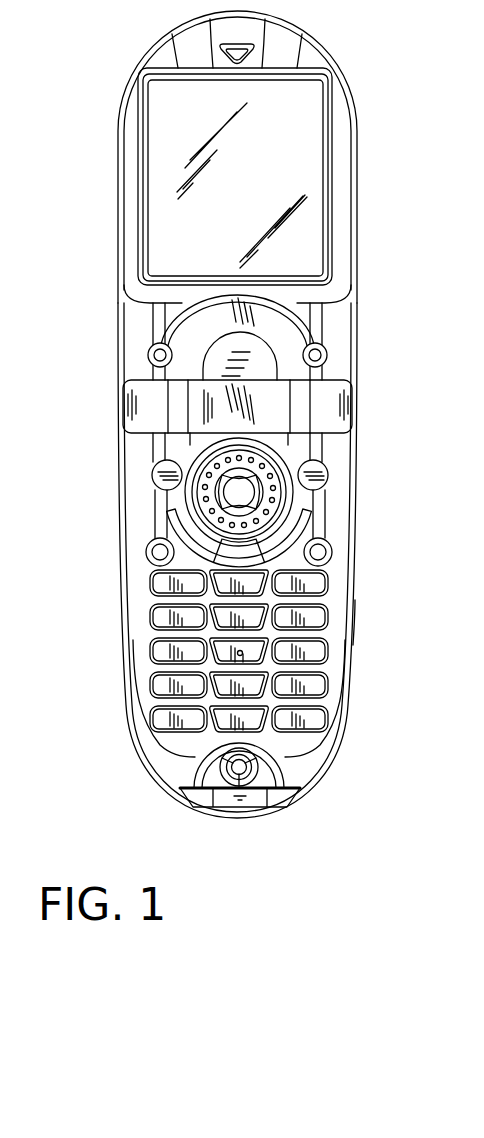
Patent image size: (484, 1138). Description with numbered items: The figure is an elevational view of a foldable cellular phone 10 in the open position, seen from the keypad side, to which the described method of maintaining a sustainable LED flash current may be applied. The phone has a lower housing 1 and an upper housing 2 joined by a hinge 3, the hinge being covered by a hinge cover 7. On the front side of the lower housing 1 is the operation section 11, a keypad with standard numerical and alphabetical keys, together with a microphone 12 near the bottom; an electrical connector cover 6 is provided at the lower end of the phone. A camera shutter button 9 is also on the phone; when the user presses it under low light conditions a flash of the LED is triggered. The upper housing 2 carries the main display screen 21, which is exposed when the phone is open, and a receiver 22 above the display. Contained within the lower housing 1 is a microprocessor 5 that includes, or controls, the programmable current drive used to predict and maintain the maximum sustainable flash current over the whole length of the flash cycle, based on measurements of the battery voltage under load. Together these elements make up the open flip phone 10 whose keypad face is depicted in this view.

The lower housing 1 is at (122, 575).
The upper housing 2 is at (118, 265).
The hinge 3 is at (278, 403).
The microprocessor 5 is at (355, 623).
The electrical connector cover 6 is at (195, 798).
The hinge cover 7 is at (123, 412).
The camera shutter button 9 is at (152, 472).
The cellular phone 10 is at (115, 488).
The operation section 11 is at (137, 677).
The microphone 12 is at (258, 762).
The main display screen 21 is at (177, 210).
The receiver 22 is at (253, 48).